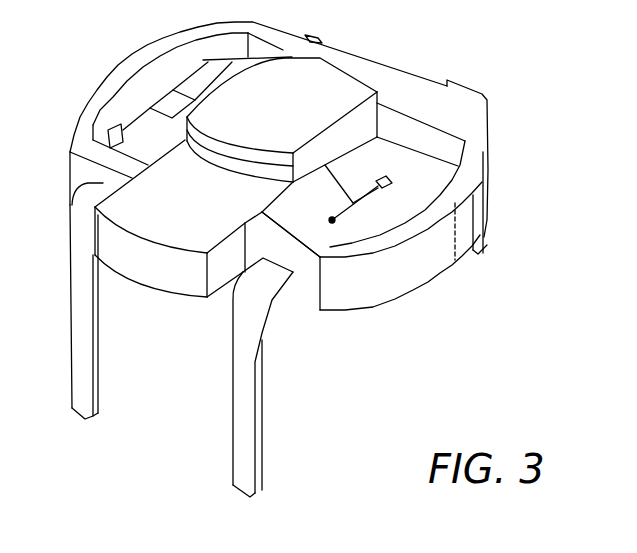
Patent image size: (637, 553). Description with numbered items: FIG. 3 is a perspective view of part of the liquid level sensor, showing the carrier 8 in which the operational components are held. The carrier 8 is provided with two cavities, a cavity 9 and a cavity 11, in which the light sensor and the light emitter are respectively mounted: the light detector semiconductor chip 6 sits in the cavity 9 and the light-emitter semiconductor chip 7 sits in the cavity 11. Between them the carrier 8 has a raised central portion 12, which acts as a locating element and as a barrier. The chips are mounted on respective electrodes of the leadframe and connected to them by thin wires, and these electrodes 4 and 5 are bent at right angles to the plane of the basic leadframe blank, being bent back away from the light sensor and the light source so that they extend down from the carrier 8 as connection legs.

The electrode 4 is at (247, 427).
The electrode 5 is at (82, 370).
The light detector semiconductor chip 6 is at (170, 100).
The light-emitter semiconductor chip 7 is at (392, 184).
The carrier 8 is at (343, 312).
The cavity 9 is at (252, 57).
The cavity 11 is at (410, 165).
The raised central portion 12 is at (300, 110).